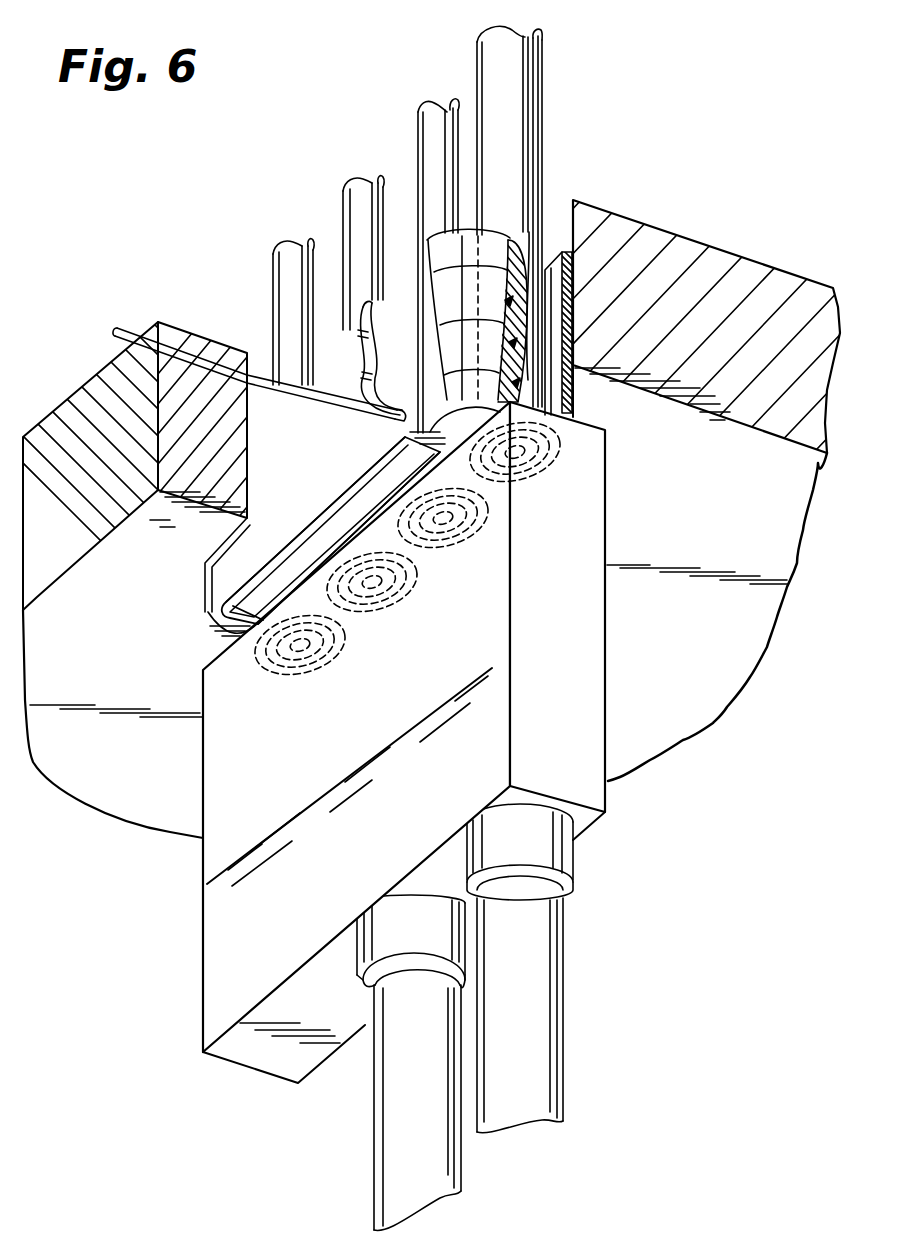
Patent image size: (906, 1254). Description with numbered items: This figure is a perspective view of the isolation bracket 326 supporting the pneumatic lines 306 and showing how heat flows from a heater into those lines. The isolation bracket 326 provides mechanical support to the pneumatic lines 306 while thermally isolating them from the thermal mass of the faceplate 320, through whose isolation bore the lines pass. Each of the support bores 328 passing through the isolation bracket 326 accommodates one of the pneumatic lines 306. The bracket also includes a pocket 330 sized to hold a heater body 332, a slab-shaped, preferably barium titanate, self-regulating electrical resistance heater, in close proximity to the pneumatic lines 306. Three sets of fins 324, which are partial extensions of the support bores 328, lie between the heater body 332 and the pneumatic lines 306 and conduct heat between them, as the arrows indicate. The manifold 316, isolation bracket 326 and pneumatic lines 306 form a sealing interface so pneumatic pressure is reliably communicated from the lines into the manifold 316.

The pneumatic lines 306 is at (285, 268).
The manifold 316 is at (208, 992).
The faceplate 320 is at (724, 262).
The fins 324 is at (523, 245).
The isolation bracket 326 is at (233, 557).
The support bores 328 is at (298, 668).
The pocket 330 is at (310, 535).
The heater body 332 is at (397, 316).